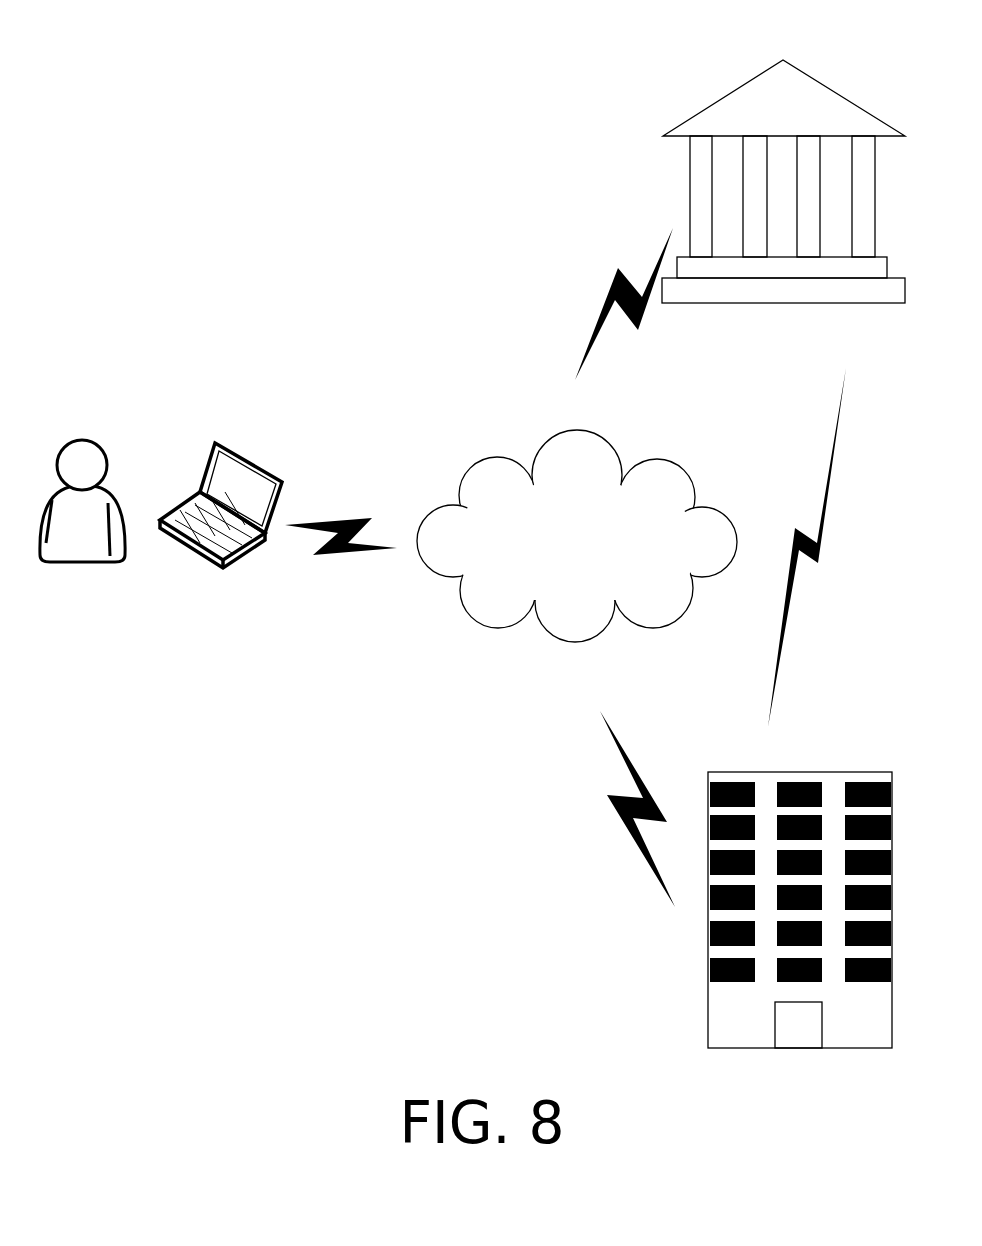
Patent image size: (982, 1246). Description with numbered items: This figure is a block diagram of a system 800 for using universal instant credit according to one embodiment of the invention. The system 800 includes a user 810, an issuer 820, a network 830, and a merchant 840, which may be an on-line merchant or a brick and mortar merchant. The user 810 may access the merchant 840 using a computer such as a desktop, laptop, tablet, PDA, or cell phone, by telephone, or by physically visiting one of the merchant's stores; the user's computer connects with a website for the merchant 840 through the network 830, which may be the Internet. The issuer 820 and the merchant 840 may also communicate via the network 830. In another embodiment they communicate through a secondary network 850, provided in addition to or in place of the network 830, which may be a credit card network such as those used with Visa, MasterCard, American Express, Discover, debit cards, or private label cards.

The system 800 is at (204, 100).
The user 810 is at (161, 533).
The issuer 820 is at (783, 209).
The network 830 is at (577, 567).
The merchant 840 is at (800, 941).
The secondary network 850 is at (800, 643).